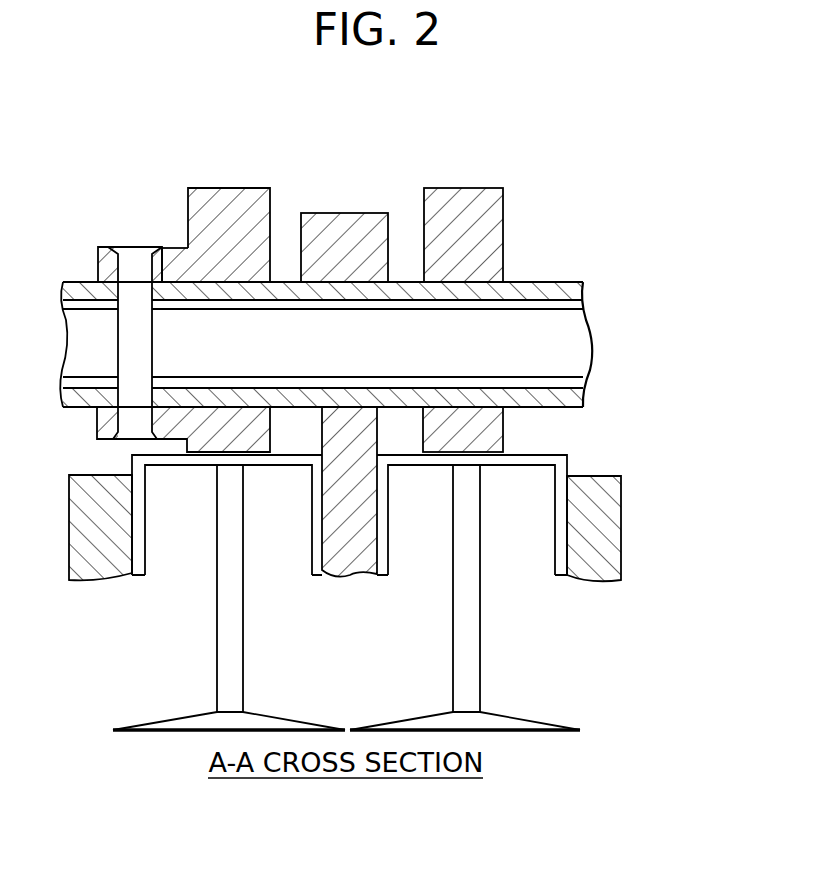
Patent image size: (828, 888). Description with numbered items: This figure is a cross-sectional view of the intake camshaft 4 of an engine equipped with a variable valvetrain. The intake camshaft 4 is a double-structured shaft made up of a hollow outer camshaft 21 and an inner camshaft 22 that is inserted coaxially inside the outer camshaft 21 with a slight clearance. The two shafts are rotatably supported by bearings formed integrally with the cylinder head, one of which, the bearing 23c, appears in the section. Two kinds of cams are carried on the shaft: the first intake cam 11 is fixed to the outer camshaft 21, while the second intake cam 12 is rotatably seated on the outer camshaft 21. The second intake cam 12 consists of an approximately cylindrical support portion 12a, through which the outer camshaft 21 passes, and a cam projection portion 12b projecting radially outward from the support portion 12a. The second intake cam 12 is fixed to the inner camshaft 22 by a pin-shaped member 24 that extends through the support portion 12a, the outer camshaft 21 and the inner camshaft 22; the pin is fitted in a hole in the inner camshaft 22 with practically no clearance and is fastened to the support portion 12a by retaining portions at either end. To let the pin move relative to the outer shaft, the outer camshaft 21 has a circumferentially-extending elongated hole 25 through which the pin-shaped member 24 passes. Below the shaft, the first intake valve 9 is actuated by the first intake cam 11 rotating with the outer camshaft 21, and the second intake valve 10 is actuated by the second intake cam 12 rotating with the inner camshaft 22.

The intake camshaft 4 is at (372, 336).
The outer camshaft 21 is at (583, 290).
The inner camshaft 22 is at (565, 333).
The first intake cam 11 is at (461, 196).
The second intake cam 12 is at (197, 281).
The support portion 12a is at (173, 242).
The cam projection portion 12b is at (230, 187).
The bearing 23c is at (344, 212).
The pin-shaped member 24 is at (108, 245).
The elongated hole 25 is at (150, 286).
The first intake valve 9 is at (467, 633).
The second intake valve 10 is at (224, 640).